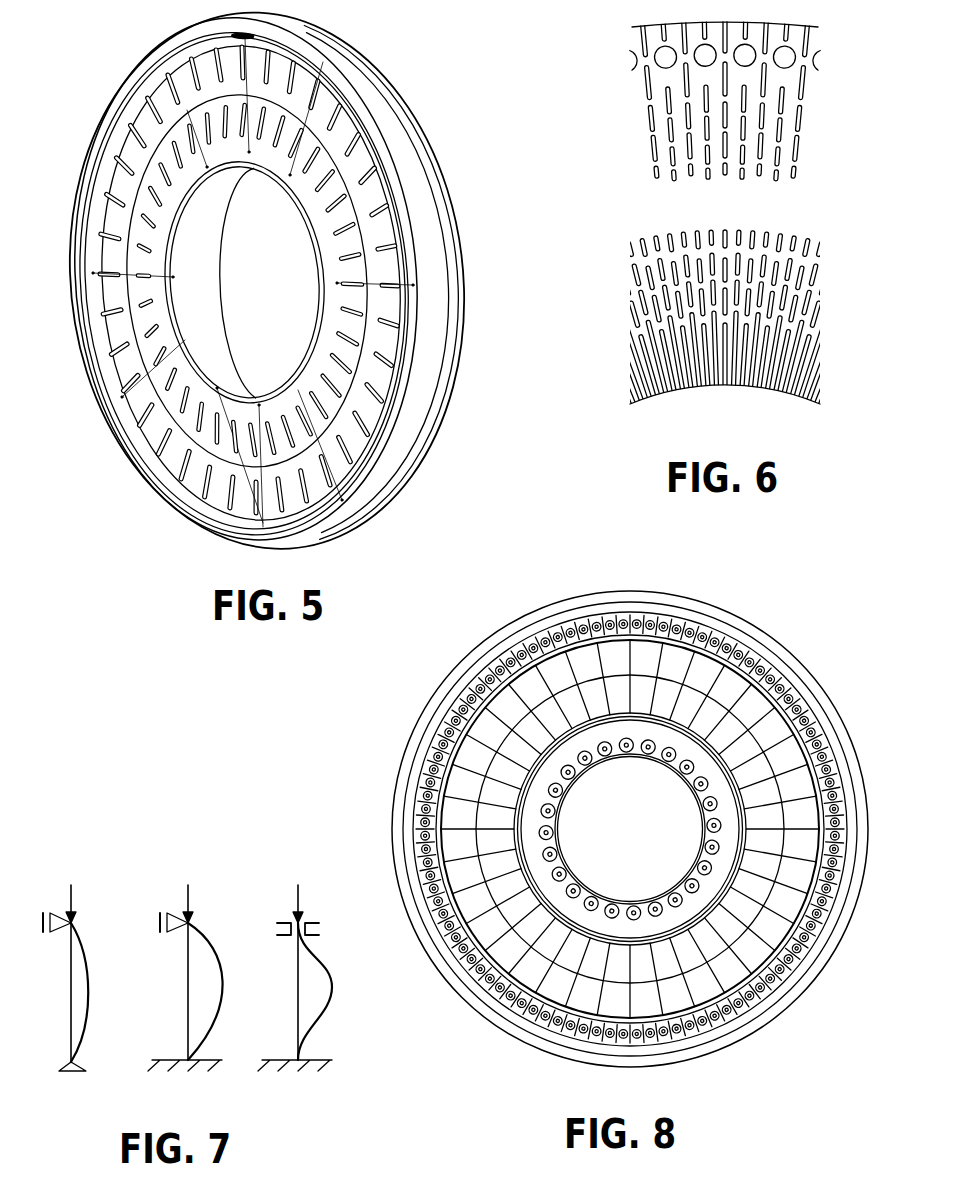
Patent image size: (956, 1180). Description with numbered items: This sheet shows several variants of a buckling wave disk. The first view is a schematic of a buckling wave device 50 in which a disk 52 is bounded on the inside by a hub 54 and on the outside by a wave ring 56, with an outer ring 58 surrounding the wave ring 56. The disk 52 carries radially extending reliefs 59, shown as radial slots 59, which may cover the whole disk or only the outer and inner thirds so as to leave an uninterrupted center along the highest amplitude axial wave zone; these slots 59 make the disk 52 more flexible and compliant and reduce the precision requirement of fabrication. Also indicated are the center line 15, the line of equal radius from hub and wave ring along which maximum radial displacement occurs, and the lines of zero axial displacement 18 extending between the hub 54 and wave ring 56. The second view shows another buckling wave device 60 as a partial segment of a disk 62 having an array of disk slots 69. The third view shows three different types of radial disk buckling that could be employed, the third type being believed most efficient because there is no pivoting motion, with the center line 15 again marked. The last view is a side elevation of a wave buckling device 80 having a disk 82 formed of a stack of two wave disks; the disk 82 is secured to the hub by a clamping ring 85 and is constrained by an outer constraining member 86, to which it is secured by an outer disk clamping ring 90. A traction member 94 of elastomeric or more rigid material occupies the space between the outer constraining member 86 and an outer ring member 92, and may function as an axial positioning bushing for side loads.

In FIG. 5, the center line 15 is at (352, 158).
In FIG. 7, the center line 15 is at (89, 979).
In FIG. 8, the center line 15 is at (472, 843).
In FIG. 5, the lines of zero axial displacement 18 is at (370, 283).
In FIG. 5, the buckling wave device 50 is at (457, 474).
In FIG. 5, the disk 52 is at (308, 82).
In FIG. 5, the hub 54 is at (213, 208).
In FIG. 5, the wave ring 56 is at (157, 65).
In FIG. 5, the outer ring 58 is at (433, 185).
In FIG. 5, the reliefs 59 is at (340, 120).
In FIG. 6, the buckling wave device 60 is at (716, 98).
In FIG. 6, the disk 62 is at (800, 217).
In FIG. 6, the disk slots 69 is at (807, 36).
In FIG. 8, the wave buckling device 80 is at (772, 603).
In FIG. 8, the disk 82 is at (483, 722).
In FIG. 8, the clamping ring 85 is at (533, 817).
In FIG. 8, the outer constraining member 86 is at (547, 623).
In FIG. 8, the outer disk clamping ring 90 is at (590, 613).
In FIG. 8, the outer ring member 92 is at (407, 758).
In FIG. 8, the traction member 94 is at (468, 682).